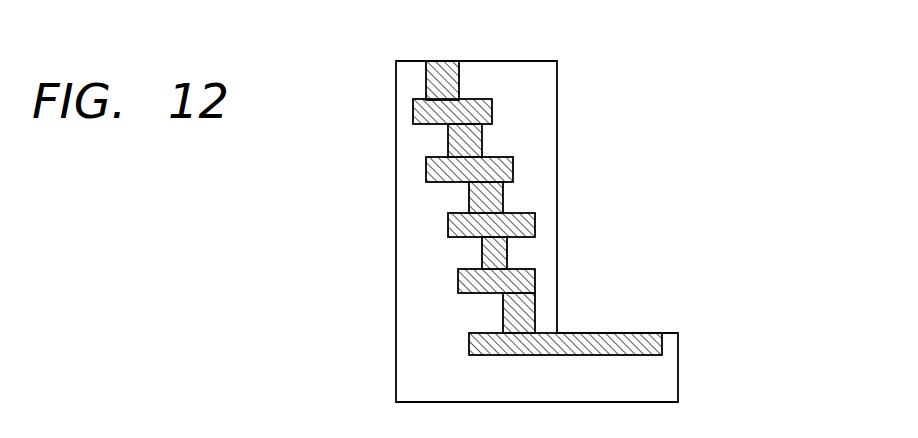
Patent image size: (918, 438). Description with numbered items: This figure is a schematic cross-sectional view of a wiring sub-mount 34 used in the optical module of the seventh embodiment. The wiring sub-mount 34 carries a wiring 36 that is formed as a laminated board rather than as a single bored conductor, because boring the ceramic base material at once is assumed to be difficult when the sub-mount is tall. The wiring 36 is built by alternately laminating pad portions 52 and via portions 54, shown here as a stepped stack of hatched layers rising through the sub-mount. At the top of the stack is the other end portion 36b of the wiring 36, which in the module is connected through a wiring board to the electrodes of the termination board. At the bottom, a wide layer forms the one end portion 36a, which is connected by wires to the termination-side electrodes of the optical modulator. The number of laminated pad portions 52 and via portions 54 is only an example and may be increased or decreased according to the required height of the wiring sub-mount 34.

The wiring sub-mount 34 is at (668, 380).
The wiring 36 is at (298, 66).
The one end portion of wiring 36a is at (628, 333).
The other end portion of wiring 36b is at (445, 61).
The pad portion 52 is at (487, 228).
The via portion 54 is at (440, 171).